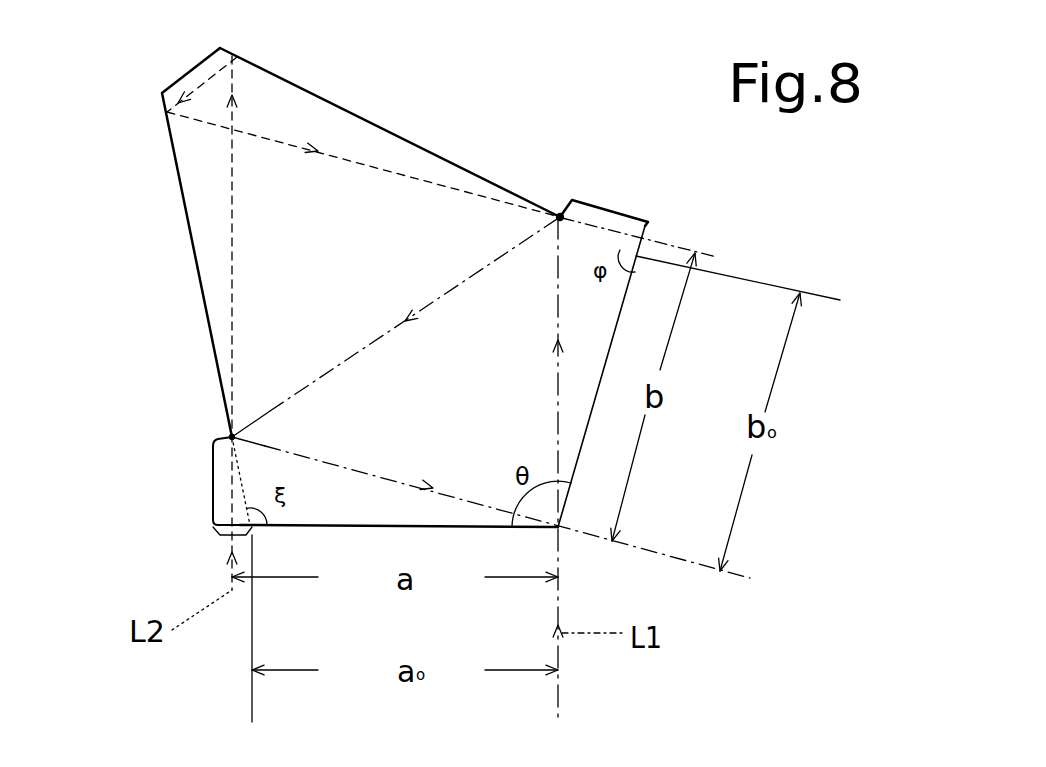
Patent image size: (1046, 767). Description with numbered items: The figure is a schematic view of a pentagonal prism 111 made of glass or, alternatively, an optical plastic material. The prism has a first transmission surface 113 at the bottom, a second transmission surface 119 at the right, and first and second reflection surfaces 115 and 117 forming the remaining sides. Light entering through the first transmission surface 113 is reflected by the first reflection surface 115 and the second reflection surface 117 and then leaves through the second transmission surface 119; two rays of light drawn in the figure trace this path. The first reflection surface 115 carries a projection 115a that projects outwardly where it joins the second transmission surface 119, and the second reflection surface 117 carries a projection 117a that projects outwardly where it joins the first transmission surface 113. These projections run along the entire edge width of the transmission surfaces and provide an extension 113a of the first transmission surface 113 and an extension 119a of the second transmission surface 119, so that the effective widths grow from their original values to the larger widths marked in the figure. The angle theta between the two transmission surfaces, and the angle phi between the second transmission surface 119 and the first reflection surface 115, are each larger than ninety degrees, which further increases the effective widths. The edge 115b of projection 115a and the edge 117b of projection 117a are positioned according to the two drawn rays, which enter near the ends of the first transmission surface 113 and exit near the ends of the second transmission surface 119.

The pentagonal prism 111 is at (342, 108).
The first transmission surface 113 is at (301, 526).
The extension of the first transmission surface 113a is at (222, 535).
The first reflection surface 115 is at (398, 149).
The projection 115a is at (610, 208).
The edge of projection 115a 115b is at (557, 210).
The second reflection surface 117 is at (198, 259).
The projection 117a is at (212, 485).
The edge of projection 117a 117b is at (228, 436).
The second transmission surface 119 is at (630, 318).
The extension of the second transmission surface 119a is at (655, 232).